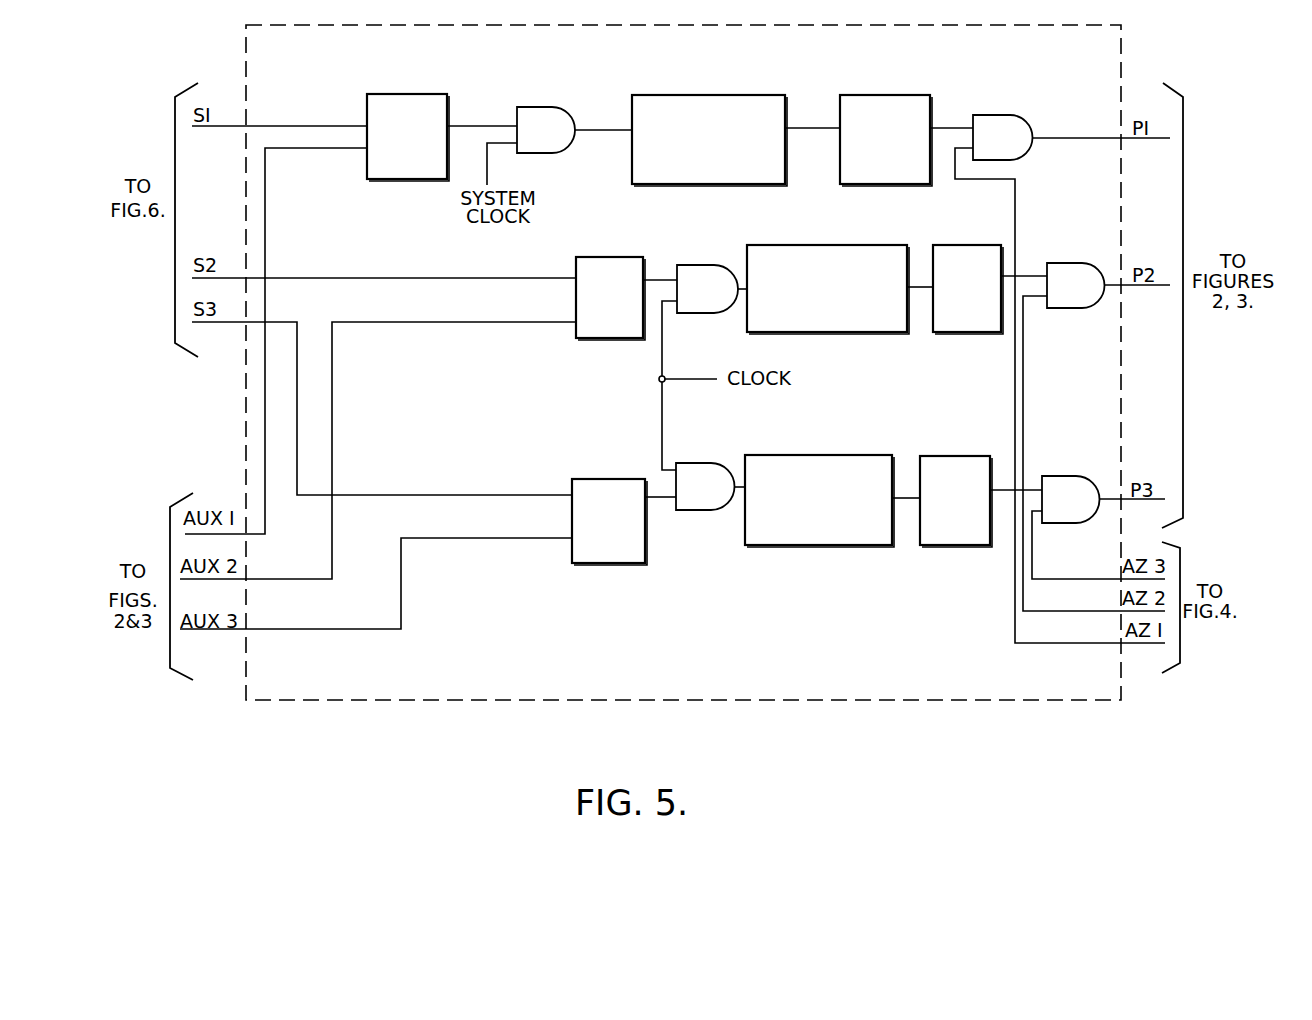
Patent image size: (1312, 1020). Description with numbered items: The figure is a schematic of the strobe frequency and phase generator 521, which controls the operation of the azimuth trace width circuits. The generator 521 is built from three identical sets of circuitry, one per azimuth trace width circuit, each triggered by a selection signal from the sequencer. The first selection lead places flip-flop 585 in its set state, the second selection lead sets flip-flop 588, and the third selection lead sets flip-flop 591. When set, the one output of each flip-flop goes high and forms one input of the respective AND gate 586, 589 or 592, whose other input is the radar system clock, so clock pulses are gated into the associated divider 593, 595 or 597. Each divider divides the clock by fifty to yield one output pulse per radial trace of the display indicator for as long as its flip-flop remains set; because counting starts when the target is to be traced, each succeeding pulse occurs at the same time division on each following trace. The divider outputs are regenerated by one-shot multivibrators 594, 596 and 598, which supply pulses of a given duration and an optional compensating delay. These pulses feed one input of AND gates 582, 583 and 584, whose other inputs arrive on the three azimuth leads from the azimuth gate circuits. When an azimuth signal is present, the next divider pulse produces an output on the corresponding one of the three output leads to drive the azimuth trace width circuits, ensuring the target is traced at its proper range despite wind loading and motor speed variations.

The strobe frequency and phase generator 521 is at (1122, 70).
The AND gate 582 is at (995, 115).
The AND gate 583 is at (1057, 263).
The AND gate 584 is at (1055, 476).
The flip-flop 585 is at (396, 94).
The AND gate 586 is at (530, 107).
The flip-flop 588 is at (612, 257).
The AND gate 589 is at (685, 266).
The flip-flop 591 is at (592, 479).
The AND gate 592 is at (682, 463).
The divider circuit 593 is at (733, 95).
The one-shot multivibrator 594 is at (878, 95).
The divider circuit 595 is at (857, 245).
The one-shot multivibrator 596 is at (948, 246).
The divider circuit 597 is at (832, 455).
The one-shot multivibrator 598 is at (940, 456).